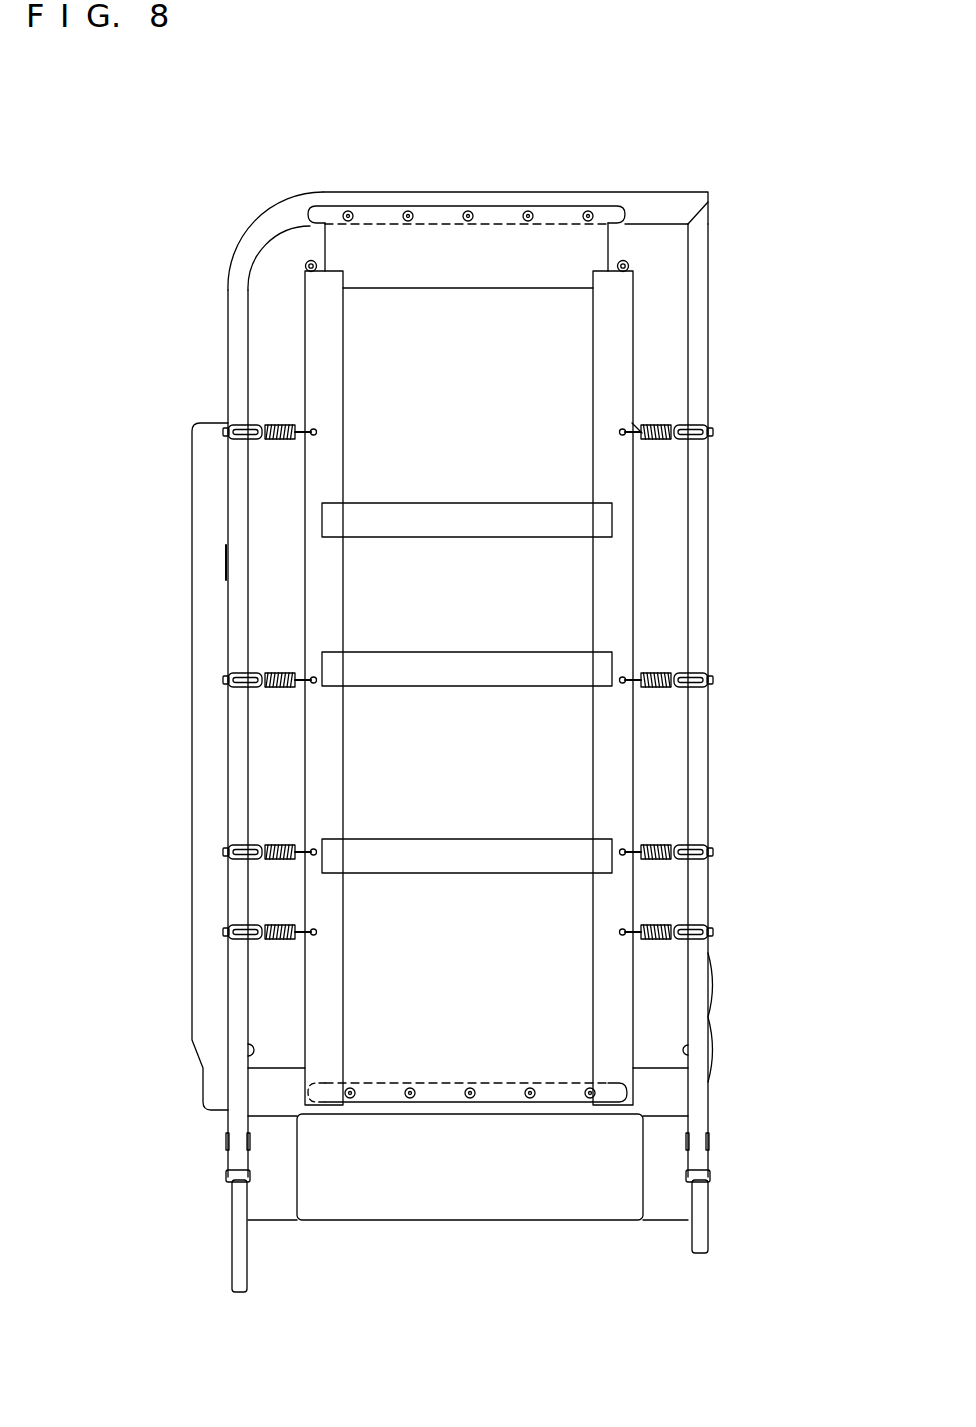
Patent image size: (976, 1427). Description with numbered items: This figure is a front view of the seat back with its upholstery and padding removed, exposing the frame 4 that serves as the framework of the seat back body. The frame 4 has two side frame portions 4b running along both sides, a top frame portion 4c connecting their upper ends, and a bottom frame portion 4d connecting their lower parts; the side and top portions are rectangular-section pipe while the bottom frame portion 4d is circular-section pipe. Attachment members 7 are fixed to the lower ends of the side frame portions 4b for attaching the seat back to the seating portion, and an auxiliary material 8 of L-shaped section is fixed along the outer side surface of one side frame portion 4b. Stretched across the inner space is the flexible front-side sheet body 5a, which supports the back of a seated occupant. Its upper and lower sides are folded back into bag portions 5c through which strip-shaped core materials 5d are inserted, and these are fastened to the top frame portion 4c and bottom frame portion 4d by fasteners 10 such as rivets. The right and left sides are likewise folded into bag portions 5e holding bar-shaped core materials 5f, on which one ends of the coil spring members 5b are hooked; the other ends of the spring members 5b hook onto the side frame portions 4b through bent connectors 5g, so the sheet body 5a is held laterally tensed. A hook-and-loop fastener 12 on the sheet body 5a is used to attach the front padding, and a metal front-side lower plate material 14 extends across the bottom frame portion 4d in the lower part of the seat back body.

The frame 4 is at (258, 214).
The side frame portion 4b is at (240, 606).
The top frame portion 4c is at (495, 200).
The bottom frame portion 4d is at (660, 1092).
The front-side sheet body 5a is at (530, 612).
The spring member 5b is at (282, 439).
The bag portion 5c is at (377, 218).
The core material 5d is at (314, 212).
The bag portion 5e is at (323, 355).
The core material 5f is at (307, 264).
The connector 5g is at (241, 440).
The attachment member 7 is at (232, 1238).
The auxiliary material 8 is at (192, 778).
The fastener 10 is at (411, 213).
The hook-and-loop fastener 12 is at (523, 853).
The front-side lower plate material 14 is at (446, 1200).